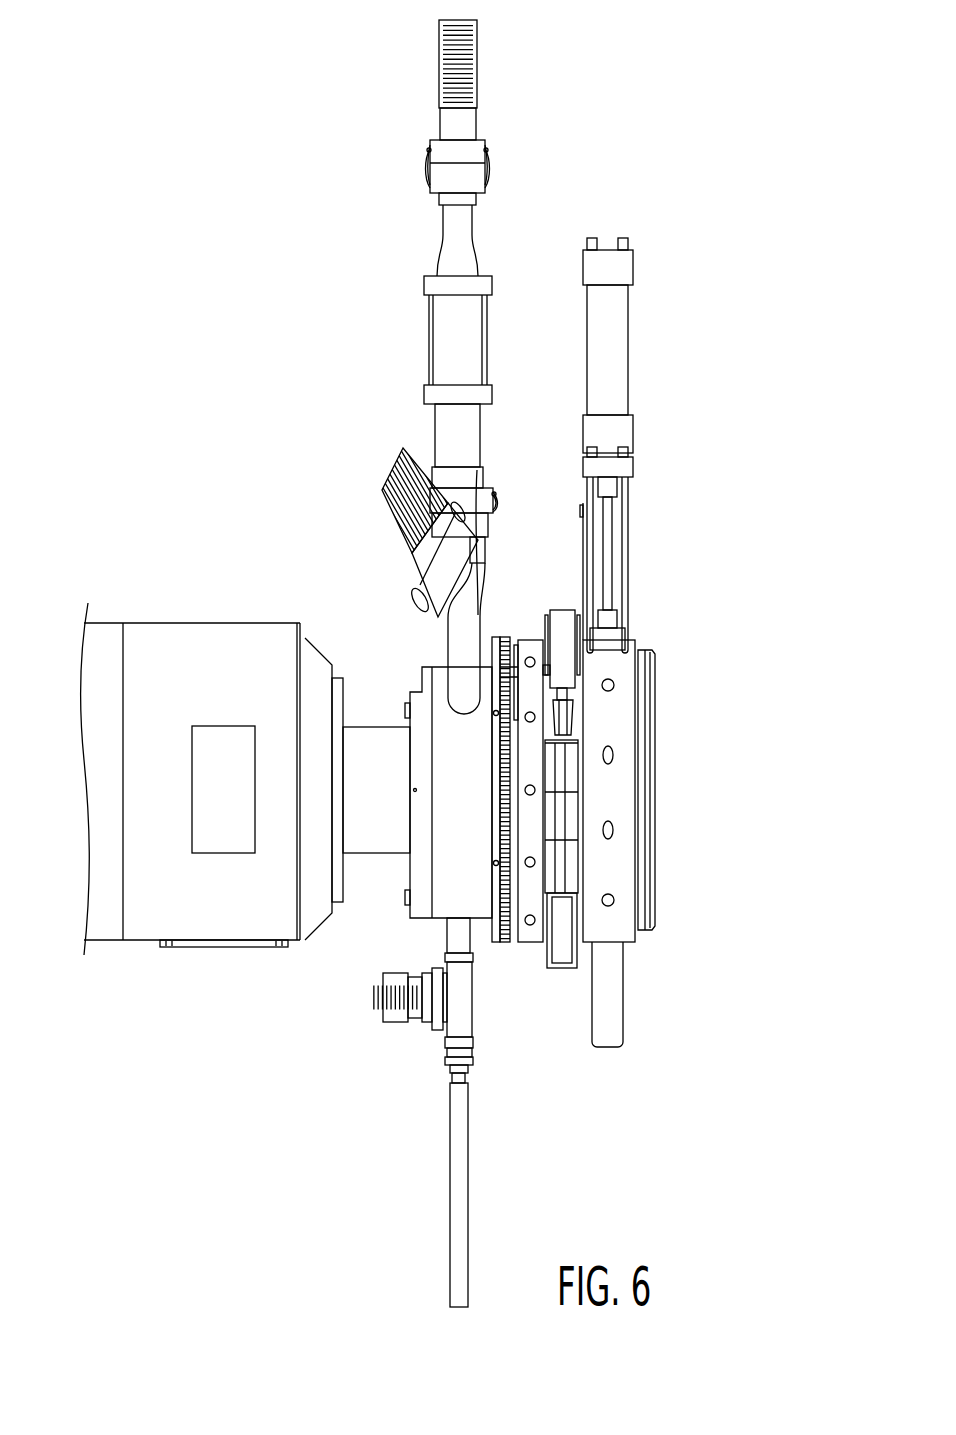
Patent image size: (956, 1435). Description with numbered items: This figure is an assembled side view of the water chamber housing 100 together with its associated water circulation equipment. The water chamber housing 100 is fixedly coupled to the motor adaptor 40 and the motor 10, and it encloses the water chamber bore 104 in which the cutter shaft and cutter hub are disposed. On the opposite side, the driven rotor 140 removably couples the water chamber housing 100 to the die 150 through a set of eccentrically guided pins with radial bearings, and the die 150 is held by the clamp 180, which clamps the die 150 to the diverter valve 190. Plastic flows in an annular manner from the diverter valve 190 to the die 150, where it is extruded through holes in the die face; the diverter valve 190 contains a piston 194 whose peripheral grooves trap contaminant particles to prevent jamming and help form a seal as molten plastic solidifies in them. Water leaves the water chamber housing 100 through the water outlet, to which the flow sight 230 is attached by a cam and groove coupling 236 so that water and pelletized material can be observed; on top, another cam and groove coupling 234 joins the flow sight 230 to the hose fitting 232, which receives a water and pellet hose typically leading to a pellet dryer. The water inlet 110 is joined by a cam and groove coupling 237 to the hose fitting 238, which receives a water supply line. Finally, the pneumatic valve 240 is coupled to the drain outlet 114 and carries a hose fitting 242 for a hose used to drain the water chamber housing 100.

The motor 10 is at (165, 622).
The motor adaptor 40 is at (370, 726).
The water chamber housing 100 is at (432, 868).
The water chamber bore 104 is at (437, 653).
The water inlet 110 is at (483, 634).
The drain outlet 114 is at (474, 955).
The driven rotor 140 is at (505, 945).
The die 150 is at (535, 945).
The clamp 180 is at (562, 608).
The diverter valve 190 is at (630, 947).
The piston 194 is at (607, 1048).
The flow sight 230 is at (428, 335).
The hose fitting 232 is at (439, 88).
The cam and groove coupling 234 is at (490, 150).
The cam and groove coupling 236 is at (492, 500).
The cam and groove coupling 237 is at (477, 470).
The hose fitting 238 is at (408, 452).
The pneumatic valve 240 is at (448, 1147).
The hose fitting 242 is at (390, 1025).